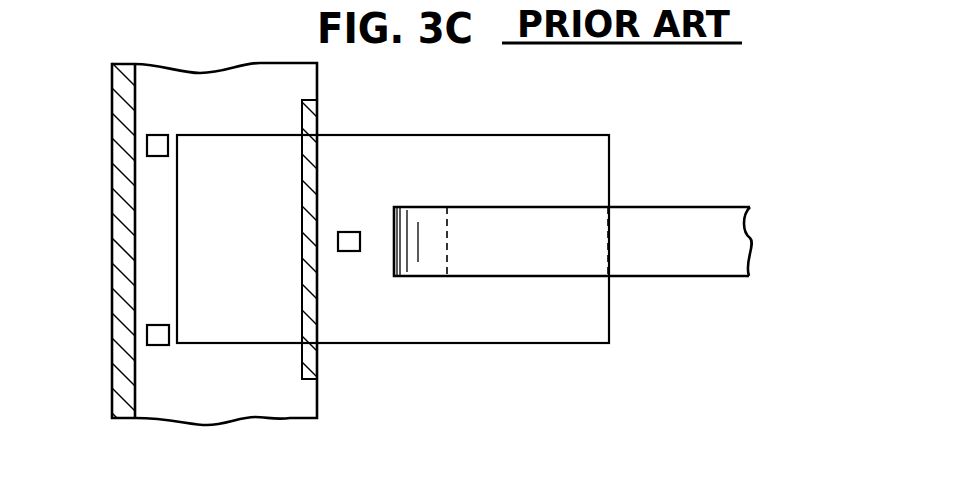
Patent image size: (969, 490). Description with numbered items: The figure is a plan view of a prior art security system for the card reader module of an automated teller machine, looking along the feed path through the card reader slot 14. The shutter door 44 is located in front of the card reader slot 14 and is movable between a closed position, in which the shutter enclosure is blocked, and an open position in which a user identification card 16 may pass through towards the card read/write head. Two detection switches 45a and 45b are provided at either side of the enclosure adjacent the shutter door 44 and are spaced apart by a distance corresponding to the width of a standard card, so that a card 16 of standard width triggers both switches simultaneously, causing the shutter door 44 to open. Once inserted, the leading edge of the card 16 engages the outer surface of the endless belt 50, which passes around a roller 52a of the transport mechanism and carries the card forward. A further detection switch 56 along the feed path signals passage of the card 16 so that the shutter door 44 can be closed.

The card reader slot 14 is at (113, 209).
The user identification card 16 is at (487, 142).
The shutter door 44 is at (313, 360).
The detection switch 45a is at (160, 345).
The detection switch 45b is at (160, 135).
The endless belt 50 is at (678, 276).
The roller 52a is at (449, 248).
The detection switch 56 is at (345, 252).